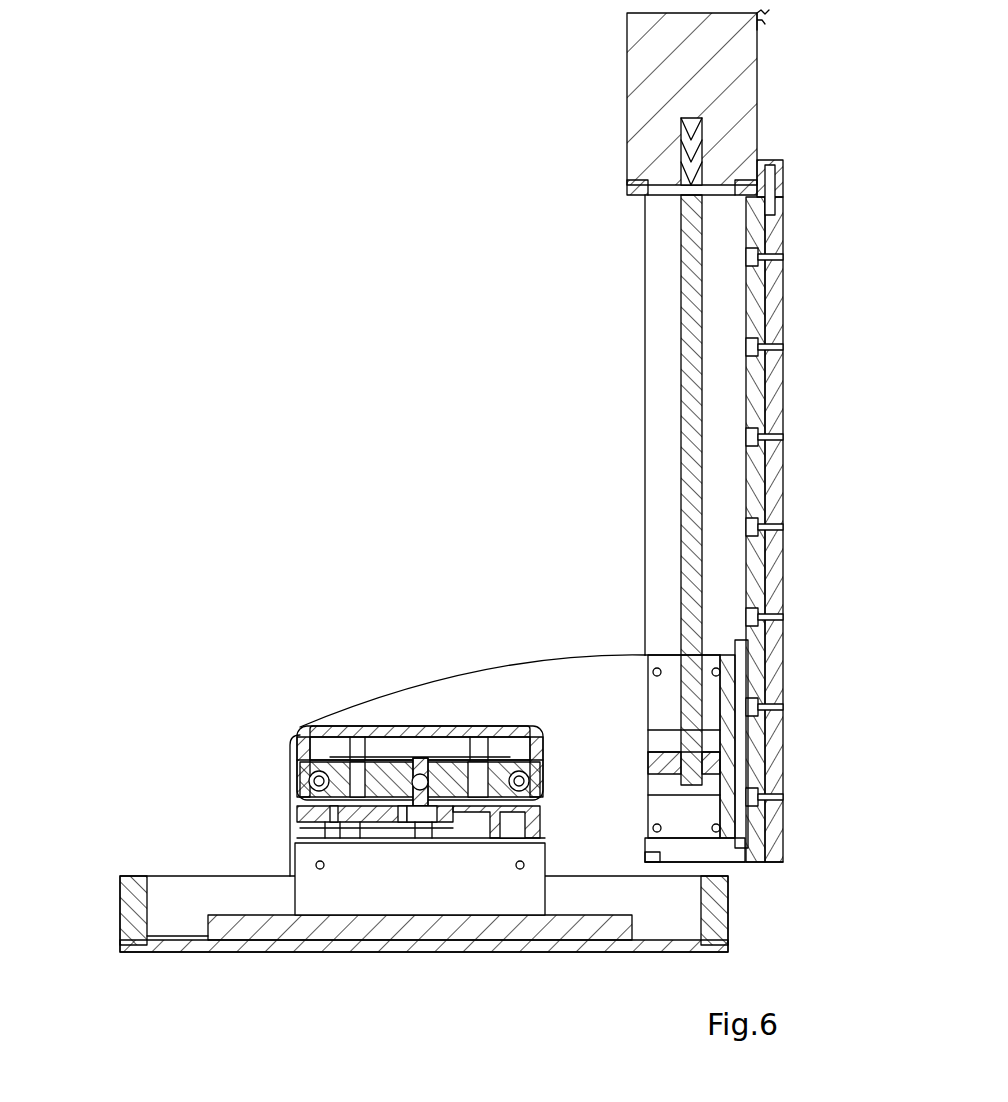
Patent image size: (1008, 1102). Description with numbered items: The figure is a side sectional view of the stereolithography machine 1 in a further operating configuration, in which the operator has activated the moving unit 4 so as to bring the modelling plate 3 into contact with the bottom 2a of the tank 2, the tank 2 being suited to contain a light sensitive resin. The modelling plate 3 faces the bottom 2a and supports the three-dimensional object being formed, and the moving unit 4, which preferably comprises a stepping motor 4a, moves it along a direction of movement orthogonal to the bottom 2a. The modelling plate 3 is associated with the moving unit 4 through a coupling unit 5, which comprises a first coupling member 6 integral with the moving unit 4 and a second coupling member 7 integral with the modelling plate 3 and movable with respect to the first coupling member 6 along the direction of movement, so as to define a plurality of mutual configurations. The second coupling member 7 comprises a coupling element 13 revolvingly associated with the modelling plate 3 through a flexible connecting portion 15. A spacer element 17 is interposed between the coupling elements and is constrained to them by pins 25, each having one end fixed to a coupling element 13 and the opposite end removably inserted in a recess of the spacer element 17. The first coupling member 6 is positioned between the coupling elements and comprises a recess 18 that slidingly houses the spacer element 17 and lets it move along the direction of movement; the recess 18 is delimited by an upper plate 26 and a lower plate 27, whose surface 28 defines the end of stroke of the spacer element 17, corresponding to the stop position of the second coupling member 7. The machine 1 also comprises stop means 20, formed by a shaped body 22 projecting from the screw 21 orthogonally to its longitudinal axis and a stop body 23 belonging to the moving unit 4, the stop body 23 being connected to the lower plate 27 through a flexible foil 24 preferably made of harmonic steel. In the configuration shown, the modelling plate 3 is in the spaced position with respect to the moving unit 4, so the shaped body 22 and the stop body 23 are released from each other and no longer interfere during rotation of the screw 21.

The stereolithography machine 1 is at (325, 243).
The tank 2 is at (125, 905).
The bottom 2a is at (178, 936).
The modelling plate 3 is at (327, 925).
The moving unit 4 is at (806, 180).
The stepping motor 4a is at (733, 97).
The coupling unit 5 is at (287, 723).
The first coupling member 6 is at (612, 682).
The second coupling member 7 is at (300, 770).
The coupling element 13 is at (290, 779).
The connecting portion 15 is at (295, 890).
The spacer element 17 is at (535, 792).
The recess 18 is at (452, 752).
The stop means 20 is at (420, 752).
The screw 21 is at (432, 790).
The shaped body 22 is at (420, 808).
The stop body 23 is at (403, 815).
The flexible foil 24 is at (440, 825).
The pin 25 is at (313, 786).
The upper plate 26 is at (483, 737).
The lower plate 27 is at (487, 812).
The surface 28 is at (355, 800).